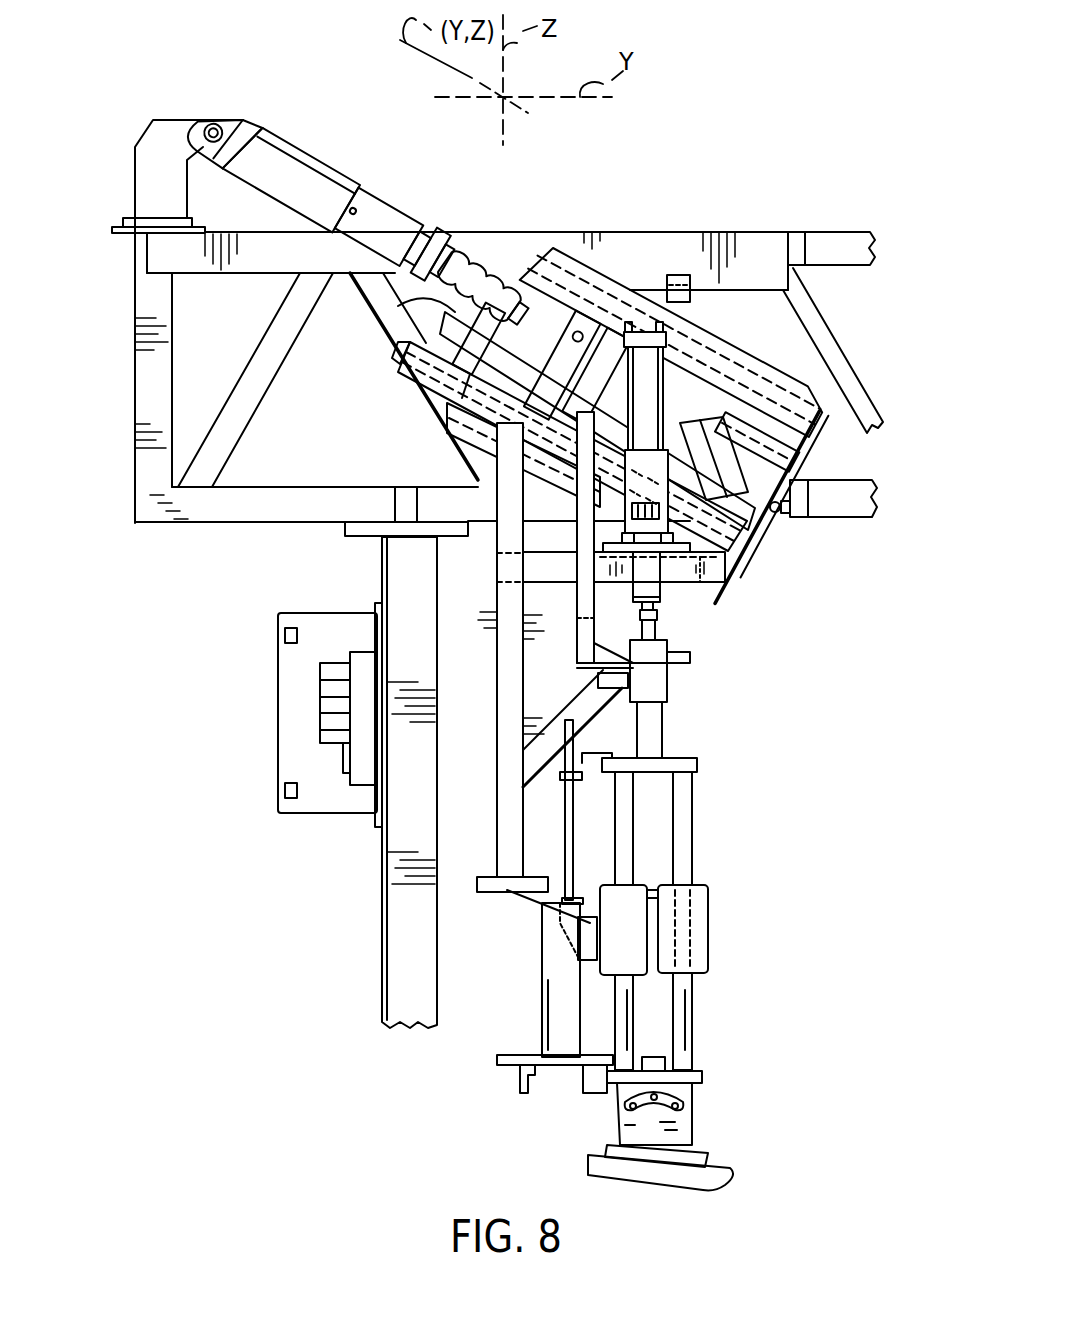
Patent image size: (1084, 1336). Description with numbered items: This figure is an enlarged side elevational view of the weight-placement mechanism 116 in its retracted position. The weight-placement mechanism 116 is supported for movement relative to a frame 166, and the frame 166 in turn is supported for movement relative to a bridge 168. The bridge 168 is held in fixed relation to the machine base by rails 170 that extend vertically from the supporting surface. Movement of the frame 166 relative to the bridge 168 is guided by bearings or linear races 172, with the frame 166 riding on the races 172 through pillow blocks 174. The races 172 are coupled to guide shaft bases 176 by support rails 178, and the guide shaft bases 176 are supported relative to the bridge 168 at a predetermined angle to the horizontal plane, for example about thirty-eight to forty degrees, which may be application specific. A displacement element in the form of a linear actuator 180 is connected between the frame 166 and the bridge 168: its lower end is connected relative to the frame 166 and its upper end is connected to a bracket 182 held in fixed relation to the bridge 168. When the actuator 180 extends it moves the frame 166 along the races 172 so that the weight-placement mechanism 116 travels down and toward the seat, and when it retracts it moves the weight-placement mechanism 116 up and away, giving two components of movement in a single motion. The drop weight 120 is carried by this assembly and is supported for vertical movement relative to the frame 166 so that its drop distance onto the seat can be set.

The weight-placement mechanism 116 is at (770, 566).
The drop weight 120 is at (772, 862).
The frame 166 is at (497, 687).
The bridge 168 is at (630, 232).
The rails 170 is at (392, 947).
The linear races 172 is at (497, 232).
The pillow blocks 174 is at (453, 457).
The guide shaft bases 176 is at (456, 233).
The support rails 178 is at (383, 330).
The linear actuator 180 is at (308, 152).
The bracket 182 is at (137, 170).